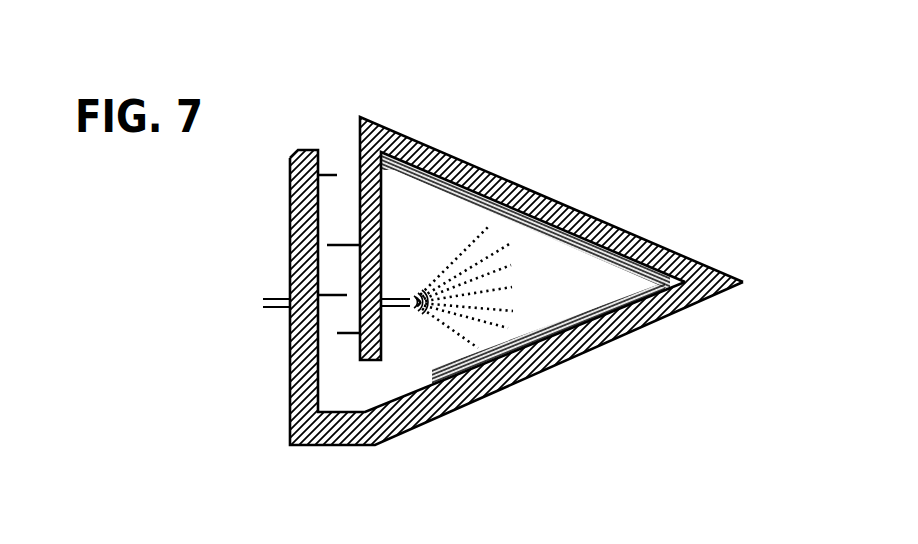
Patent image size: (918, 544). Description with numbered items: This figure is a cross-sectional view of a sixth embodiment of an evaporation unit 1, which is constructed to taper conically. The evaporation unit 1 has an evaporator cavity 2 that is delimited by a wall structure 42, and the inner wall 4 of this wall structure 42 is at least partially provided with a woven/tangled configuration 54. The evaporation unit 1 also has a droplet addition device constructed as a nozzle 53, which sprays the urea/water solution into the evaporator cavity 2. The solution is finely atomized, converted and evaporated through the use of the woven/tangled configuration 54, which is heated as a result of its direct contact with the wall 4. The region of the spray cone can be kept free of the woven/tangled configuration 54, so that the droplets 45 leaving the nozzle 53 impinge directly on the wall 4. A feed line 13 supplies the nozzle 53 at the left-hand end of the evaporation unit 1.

The evaporation unit 1 is at (625, 368).
The evaporator cavity 2 is at (522, 303).
The inner wall 4 is at (657, 259).
The feed line 13 is at (345, 267).
The wall structure 42 is at (478, 171).
The droplets 45 is at (533, 250).
The nozzle 53 is at (411, 290).
The woven/tangled configuration 54 is at (630, 258).